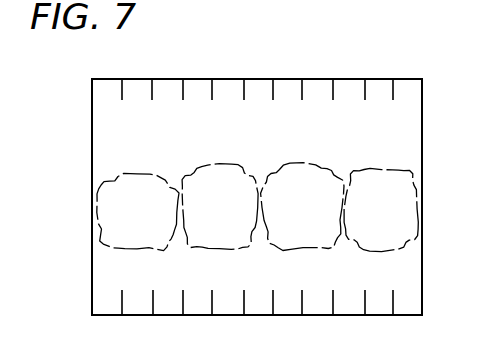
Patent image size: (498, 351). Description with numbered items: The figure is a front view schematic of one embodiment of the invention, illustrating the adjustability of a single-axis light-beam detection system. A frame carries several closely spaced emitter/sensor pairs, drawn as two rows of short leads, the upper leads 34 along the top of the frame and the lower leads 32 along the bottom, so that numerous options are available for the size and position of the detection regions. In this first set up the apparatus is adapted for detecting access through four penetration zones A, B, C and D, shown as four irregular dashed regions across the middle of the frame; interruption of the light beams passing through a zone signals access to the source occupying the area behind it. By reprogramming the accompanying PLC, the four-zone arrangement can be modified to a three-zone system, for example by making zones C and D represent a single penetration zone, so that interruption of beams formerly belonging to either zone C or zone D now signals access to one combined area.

The upper lead lines 34 is at (122, 79).
The lower lead lines 32 is at (122, 315).
The penetration zone A is at (138, 211).
The penetration zone B is at (220, 207).
The penetration zone C is at (302, 207).
The penetration zone D is at (381, 209).